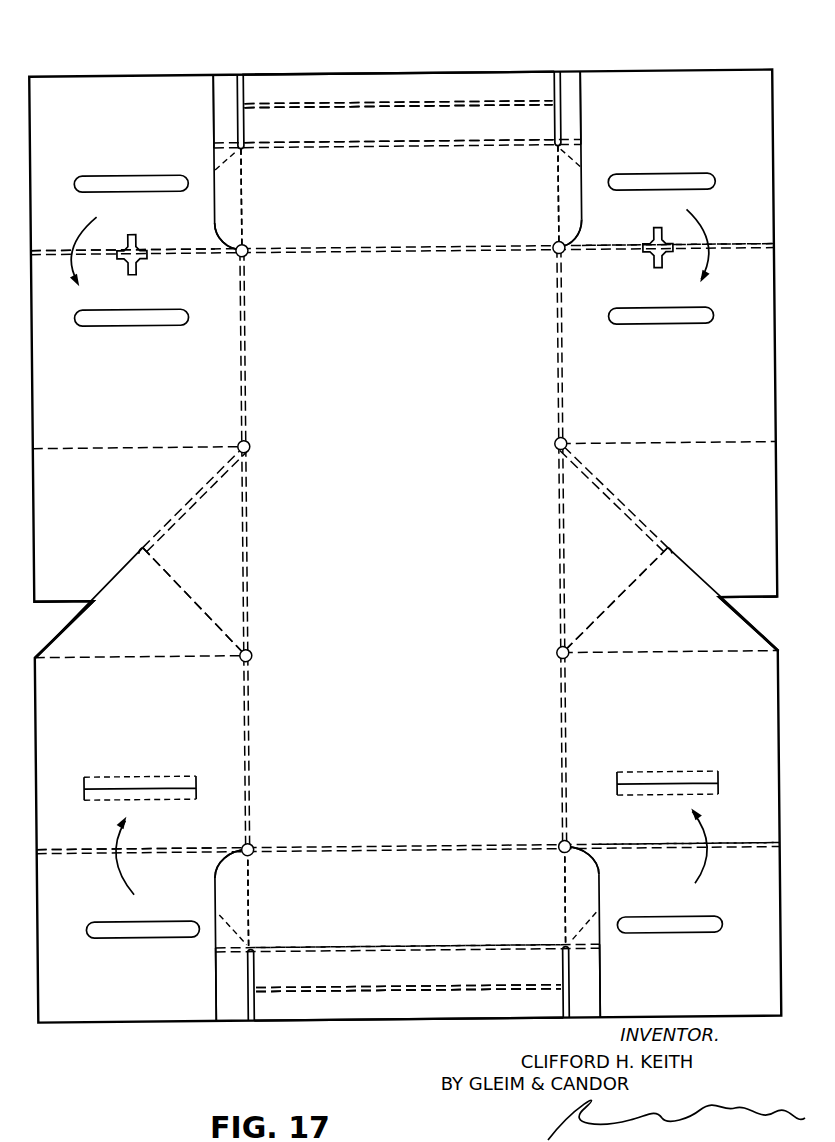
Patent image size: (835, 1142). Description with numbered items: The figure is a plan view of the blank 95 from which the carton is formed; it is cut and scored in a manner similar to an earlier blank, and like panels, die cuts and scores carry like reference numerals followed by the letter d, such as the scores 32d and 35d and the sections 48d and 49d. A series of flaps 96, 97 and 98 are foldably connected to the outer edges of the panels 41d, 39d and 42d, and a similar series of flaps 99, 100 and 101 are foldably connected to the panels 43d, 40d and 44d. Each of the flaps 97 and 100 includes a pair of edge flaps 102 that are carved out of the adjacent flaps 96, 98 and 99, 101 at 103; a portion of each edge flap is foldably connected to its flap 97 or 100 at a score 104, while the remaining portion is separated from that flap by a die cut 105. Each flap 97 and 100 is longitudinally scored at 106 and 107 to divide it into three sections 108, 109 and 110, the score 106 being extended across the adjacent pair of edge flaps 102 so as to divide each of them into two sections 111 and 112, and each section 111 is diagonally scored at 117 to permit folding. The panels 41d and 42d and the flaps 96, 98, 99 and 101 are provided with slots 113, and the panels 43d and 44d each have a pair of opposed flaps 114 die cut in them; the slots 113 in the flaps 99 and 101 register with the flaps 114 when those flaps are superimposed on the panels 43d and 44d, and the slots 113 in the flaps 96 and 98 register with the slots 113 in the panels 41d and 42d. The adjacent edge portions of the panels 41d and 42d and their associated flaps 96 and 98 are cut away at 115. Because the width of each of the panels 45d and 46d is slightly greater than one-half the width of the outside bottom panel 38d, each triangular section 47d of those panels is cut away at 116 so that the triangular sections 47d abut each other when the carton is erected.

The blank 95 is at (660, 52).
The flap 96 is at (122, 92).
The flap 97 is at (375, 92).
The flap 98 is at (690, 86).
The flap 99 is at (143, 1021).
The flap 100 is at (395, 1005).
The flap 101 is at (658, 1005).
The edge flap 102 is at (236, 203).
The carve-out cut 103 is at (217, 120).
The score 104 is at (246, 175).
The die cut 105 is at (248, 72).
The longitudinal score 106 is at (416, 945).
The longitudinal score 107 is at (449, 986).
The flap section 108 is at (383, 183).
The flap section 109 is at (383, 135).
The flap section 110 is at (378, 98).
The edge flap section 111 is at (228, 198).
The edge flap section 112 is at (227, 96).
The slot 113 is at (116, 179).
The opposed flap 114 is at (107, 796).
The cut-away 115 is at (146, 256).
The cut-away 116 is at (61, 630).
The diagonal score 117 is at (229, 158).
The score 32d is at (405, 258).
The score 35d is at (334, 846).
The outside bottom panel 38d is at (386, 561).
The panel 39d is at (382, 368).
The panel 40d is at (395, 716).
The panel 41d is at (119, 368).
The panel 42d is at (639, 368).
The panel 43d is at (143, 716).
The panel 44d is at (631, 716).
The panel 45d is at (112, 606).
The panel 46d is at (716, 608).
The triangular section 47d is at (78, 498).
The section 48d is at (182, 562).
The section 49d is at (132, 625).